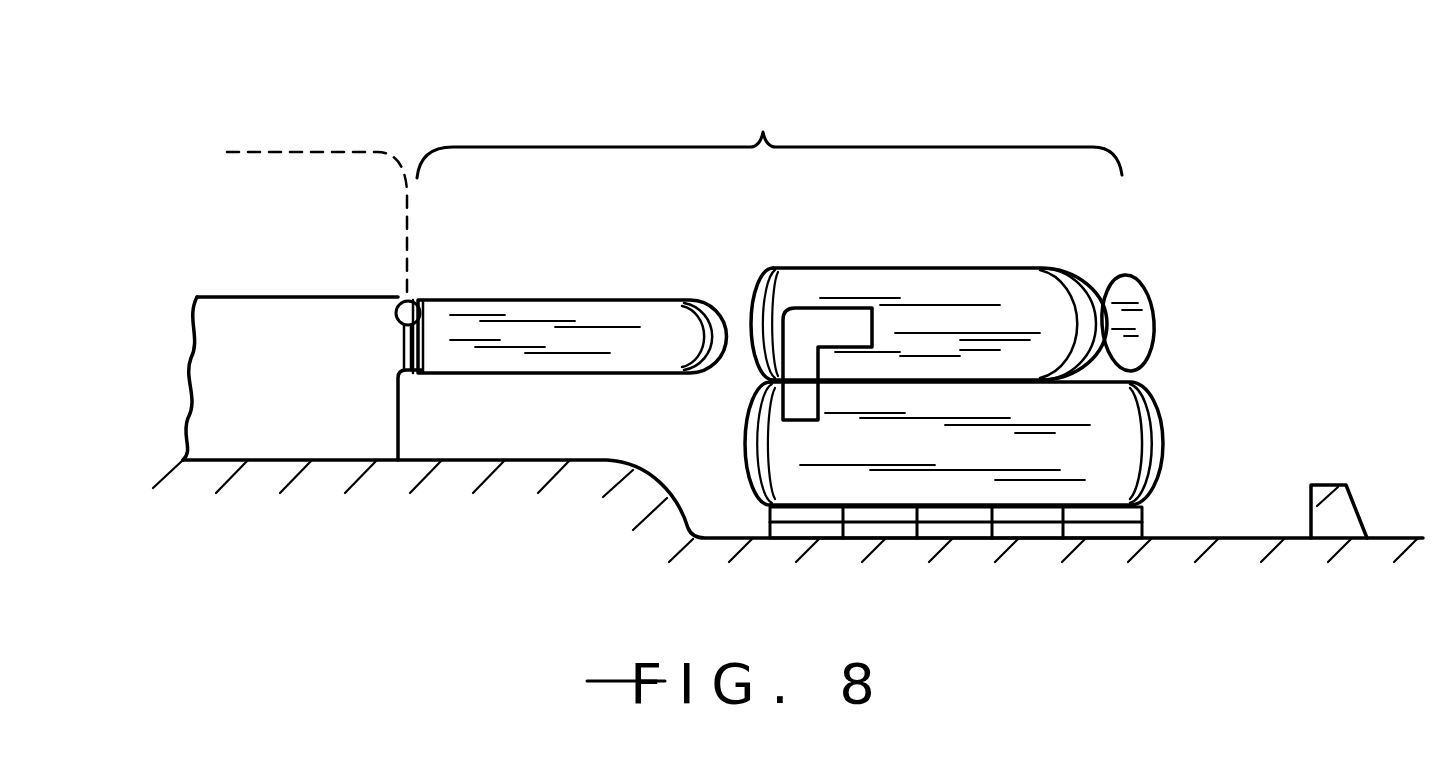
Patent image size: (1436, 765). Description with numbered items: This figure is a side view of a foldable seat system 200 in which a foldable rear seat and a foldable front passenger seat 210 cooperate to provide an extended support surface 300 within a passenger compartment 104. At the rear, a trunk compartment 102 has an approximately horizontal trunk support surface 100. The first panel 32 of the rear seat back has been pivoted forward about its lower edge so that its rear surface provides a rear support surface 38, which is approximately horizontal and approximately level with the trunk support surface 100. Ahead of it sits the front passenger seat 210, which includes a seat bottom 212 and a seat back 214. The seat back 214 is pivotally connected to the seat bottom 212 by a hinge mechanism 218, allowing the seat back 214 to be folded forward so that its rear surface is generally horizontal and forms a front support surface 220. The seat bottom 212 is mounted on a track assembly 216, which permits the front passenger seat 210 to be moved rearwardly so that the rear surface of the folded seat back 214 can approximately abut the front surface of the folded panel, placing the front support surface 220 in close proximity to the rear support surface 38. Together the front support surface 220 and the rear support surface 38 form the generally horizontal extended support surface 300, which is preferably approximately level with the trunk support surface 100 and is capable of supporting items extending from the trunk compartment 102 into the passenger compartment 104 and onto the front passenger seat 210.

The trunk support surface 100 is at (255, 297).
The trunk compartment 102 is at (331, 197).
The passenger compartment 104 is at (1250, 539).
The first panel 32 is at (573, 373).
The rear support surface 38 is at (563, 297).
The foldable seat system 200 is at (1120, 98).
The front passenger seat 210 is at (1188, 283).
The seat bottom 212 is at (1137, 429).
The seat back 214 is at (1020, 295).
The track assembly 216 is at (1144, 531).
The hinge mechanism 218 is at (793, 398).
The front support surface 220 is at (875, 268).
The extended support surface 300 is at (769, 130).